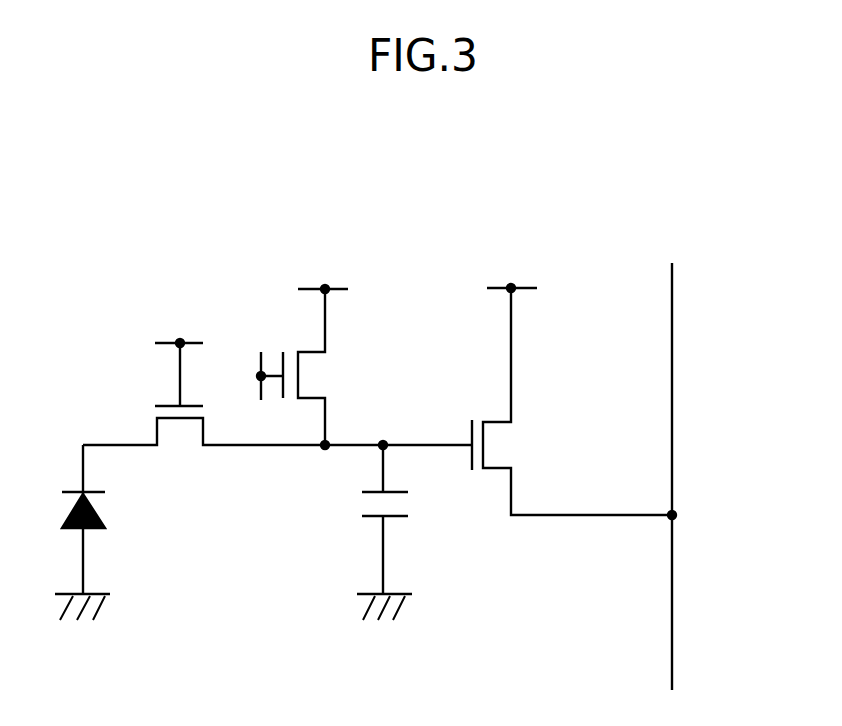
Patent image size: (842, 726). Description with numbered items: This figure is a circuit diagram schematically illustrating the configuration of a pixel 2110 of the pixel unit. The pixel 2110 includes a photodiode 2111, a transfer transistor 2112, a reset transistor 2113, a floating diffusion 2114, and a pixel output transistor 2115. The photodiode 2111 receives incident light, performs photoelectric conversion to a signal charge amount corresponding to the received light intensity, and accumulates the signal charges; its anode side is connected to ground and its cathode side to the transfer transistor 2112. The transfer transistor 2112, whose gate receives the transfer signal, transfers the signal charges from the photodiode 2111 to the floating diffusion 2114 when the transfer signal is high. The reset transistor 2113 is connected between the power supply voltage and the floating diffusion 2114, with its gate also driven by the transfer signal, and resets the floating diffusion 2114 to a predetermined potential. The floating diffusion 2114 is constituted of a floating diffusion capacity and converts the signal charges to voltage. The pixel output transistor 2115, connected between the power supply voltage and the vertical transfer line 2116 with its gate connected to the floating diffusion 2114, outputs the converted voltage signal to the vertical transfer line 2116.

The pixel 2110 is at (668, 204).
The photodiode 2111 is at (97, 508).
The transfer transistor 2112 is at (153, 413).
The reset transistor 2113 is at (294, 352).
The floating diffusion 2114 is at (402, 523).
The pixel output transistor 2115 is at (473, 416).
The vertical transfer line 2116 is at (672, 330).